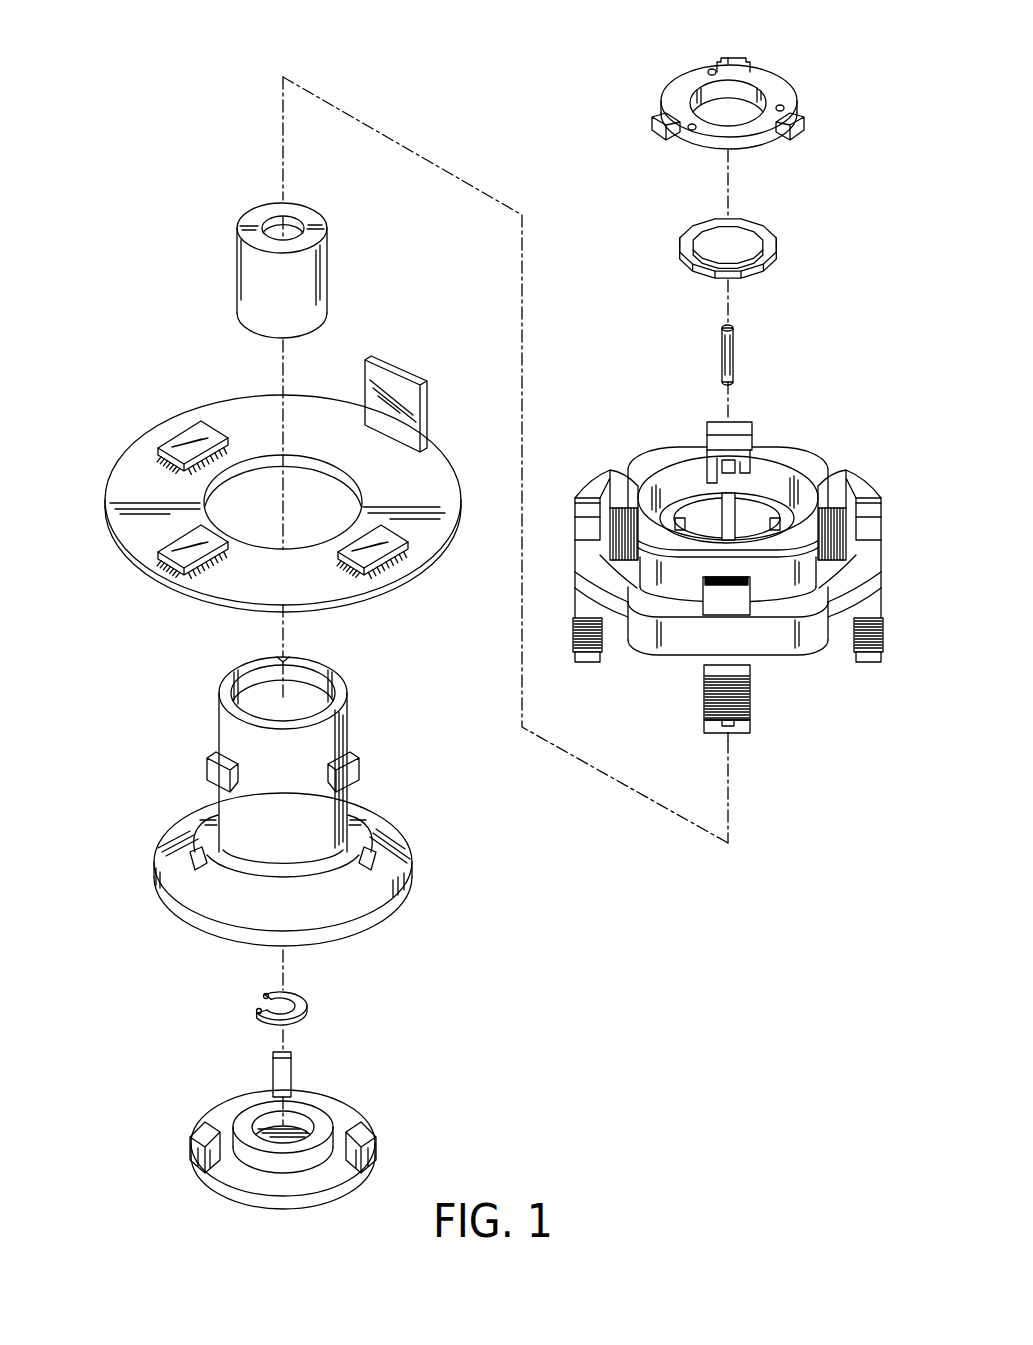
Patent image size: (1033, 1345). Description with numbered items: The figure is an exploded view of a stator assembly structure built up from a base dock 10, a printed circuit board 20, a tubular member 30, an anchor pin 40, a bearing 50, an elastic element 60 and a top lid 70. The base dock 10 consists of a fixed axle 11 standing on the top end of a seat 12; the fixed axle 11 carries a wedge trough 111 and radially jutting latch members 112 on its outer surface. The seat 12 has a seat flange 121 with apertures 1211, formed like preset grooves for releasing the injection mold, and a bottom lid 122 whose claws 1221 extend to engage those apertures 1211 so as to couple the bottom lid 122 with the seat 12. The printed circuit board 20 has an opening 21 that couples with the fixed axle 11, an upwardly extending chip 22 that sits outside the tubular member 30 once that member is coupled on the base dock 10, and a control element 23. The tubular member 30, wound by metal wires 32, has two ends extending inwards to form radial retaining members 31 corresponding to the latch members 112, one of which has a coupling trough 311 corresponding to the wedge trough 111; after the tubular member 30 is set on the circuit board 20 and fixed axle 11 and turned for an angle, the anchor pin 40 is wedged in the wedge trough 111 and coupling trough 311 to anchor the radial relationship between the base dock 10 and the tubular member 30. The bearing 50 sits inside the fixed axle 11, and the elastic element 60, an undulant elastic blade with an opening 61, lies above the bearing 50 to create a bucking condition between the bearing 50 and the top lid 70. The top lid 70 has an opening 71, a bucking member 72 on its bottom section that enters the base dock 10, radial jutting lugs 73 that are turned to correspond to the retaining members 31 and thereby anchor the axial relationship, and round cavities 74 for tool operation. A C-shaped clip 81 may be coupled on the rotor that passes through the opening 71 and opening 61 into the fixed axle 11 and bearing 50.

The base dock 10 is at (130, 779).
The fixed axle 11 is at (285, 733).
The wedge trough 111 is at (290, 655).
The jutting latch members 112 is at (357, 772).
The seat 12 is at (311, 875).
The seat flange 121 is at (207, 905).
The apertures 1211 is at (372, 862).
The bottom lid 122 is at (302, 1130).
The claws 1221 is at (366, 1131).
The printed circuit board 20 is at (276, 465).
The opening 21 is at (258, 485).
The chip 22 is at (400, 388).
The control element 23 is at (180, 548).
The tubular member 30 is at (752, 567).
The retaining members 31 is at (710, 447).
The coupling trough 311 is at (748, 456).
The metal wires 32 is at (838, 543).
The anchor pin 40 is at (722, 354).
The bearing 50 is at (251, 268).
The elastic element 60 is at (753, 246).
The opening 61 is at (706, 243).
The top lid 70 is at (751, 96).
The opening 71 is at (706, 92).
The bucking member 72 is at (701, 147).
The jutting lugs 73 is at (655, 130).
The round cavities 74 is at (711, 68).
The C-shaped clip 81 is at (310, 1008).